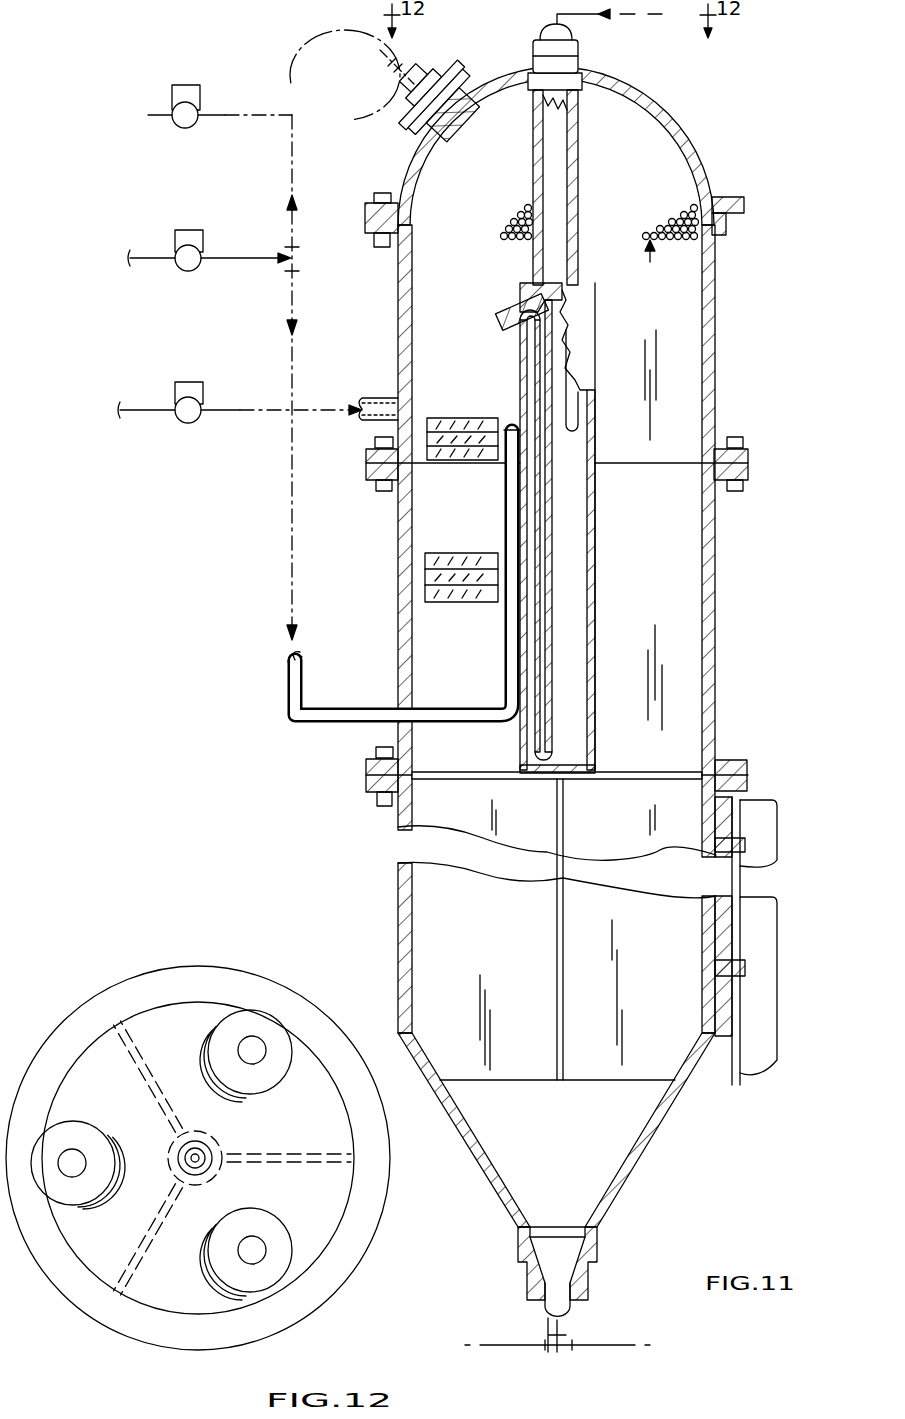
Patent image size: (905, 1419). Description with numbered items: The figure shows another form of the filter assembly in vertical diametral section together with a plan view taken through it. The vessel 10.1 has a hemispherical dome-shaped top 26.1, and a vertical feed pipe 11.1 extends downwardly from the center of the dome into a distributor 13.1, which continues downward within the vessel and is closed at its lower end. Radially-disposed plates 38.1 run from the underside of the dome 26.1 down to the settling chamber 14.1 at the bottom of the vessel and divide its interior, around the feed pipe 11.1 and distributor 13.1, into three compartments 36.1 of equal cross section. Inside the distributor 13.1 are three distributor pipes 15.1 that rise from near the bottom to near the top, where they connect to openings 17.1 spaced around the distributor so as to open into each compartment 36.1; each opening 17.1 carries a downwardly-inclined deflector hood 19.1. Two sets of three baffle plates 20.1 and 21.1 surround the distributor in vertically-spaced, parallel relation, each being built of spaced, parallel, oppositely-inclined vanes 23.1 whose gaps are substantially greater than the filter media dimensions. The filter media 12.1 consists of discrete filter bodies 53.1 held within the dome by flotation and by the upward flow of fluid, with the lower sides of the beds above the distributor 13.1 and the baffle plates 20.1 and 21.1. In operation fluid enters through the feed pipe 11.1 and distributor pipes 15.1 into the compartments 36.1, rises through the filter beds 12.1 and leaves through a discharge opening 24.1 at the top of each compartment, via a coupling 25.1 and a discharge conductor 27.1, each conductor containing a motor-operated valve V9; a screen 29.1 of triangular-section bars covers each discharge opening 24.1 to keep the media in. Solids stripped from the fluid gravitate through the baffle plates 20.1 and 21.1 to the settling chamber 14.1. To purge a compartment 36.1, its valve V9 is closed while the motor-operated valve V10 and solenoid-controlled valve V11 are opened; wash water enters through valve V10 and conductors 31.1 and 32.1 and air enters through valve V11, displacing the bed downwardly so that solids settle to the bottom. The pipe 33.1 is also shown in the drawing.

In FIG. 11, the vessel 10.1 is at (722, 693).
In FIG. 12, the vessel 10.1 is at (316, 1010).
In FIG. 11, the feed pipe 11.1 is at (578, 183).
In FIG. 12, the feed pipe 11.1 is at (204, 1142).
In FIG. 11, the filter media 12.1 is at (652, 266).
In FIG. 11, the distributor 13.1 is at (595, 584).
In FIG. 12, the distributor 13.1 is at (230, 1135).
In FIG. 11, the settling chamber 14.1 is at (487, 1140).
In FIG. 11, the distributor pipes 15.1 is at (520, 743).
In FIG. 11, the openings 17.1 is at (513, 297).
In FIG. 11, the deflector hood 19.1 is at (506, 329).
In FIG. 11, the baffle plates 20.1 is at (471, 388).
In FIG. 11, the baffle plates 21.1 is at (482, 522).
In FIG. 11, the vanes 23.1 is at (443, 460).
In FIG. 11, the discharge opening 24.1 is at (402, 70).
In FIG. 11, the coupling 25.1 is at (425, 83).
In FIG. 12, the coupling 25.1 is at (225, 1035).
In FIG. 11, the dome-shaped top 26.1 is at (682, 141).
In FIG. 12, the dome-shaped top 26.1 is at (140, 1018).
In FIG. 11, the discharge conductor 27.1 is at (240, 115).
In FIG. 11, the screen 29.1 is at (473, 80).
In FIG. 11, the conductor 31.1 is at (292, 163).
In FIG. 11, the conductor 32.1 is at (292, 440).
In FIG. 11, the feed pipe 33.1 is at (504, 670).
In FIG. 11, the compartments 36.1 is at (702, 596).
In FIG. 11, the radially-disposed plates 38.1 is at (569, 1068).
In FIG. 12, the radially-disposed plates 38.1 is at (135, 1263).
In FIG. 11, the filter bodies 53.1 is at (500, 217).
In FIG. 11, the motor-operated valve V9 is at (183, 128).
In FIG. 11, the motor-operated valve V10 is at (186, 271).
In FIG. 11, the solenoid-controlled valve V11 is at (185, 423).